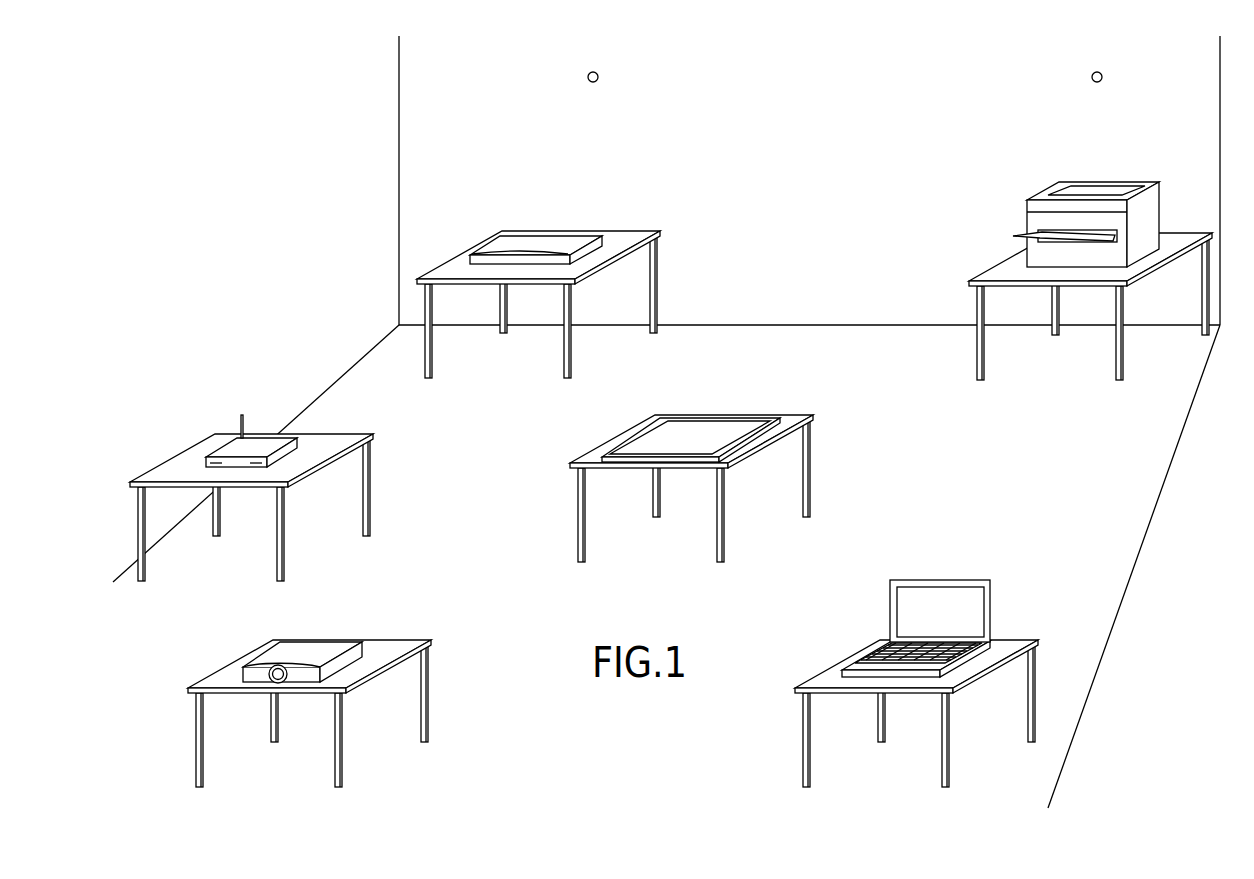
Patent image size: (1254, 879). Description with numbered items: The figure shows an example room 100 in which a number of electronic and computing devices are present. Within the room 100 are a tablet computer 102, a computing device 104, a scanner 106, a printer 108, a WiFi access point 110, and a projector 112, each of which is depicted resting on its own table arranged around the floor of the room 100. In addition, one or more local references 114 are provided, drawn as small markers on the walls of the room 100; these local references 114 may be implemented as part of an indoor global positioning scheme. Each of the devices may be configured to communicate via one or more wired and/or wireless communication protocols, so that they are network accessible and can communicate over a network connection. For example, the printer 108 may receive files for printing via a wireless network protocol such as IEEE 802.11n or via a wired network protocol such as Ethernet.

The room 100 is at (904, 178).
The tablet computer 102 is at (741, 416).
The computing device 104 is at (992, 598).
The scanner 106 is at (551, 232).
The printer 108 is at (1158, 205).
The WiFi access point 110 is at (296, 436).
The projector 112 is at (367, 646).
The local references 114 is at (598, 77).